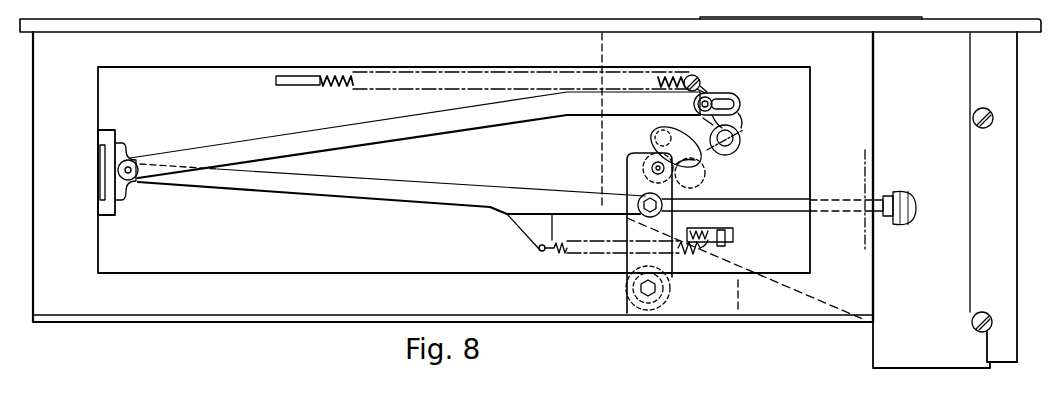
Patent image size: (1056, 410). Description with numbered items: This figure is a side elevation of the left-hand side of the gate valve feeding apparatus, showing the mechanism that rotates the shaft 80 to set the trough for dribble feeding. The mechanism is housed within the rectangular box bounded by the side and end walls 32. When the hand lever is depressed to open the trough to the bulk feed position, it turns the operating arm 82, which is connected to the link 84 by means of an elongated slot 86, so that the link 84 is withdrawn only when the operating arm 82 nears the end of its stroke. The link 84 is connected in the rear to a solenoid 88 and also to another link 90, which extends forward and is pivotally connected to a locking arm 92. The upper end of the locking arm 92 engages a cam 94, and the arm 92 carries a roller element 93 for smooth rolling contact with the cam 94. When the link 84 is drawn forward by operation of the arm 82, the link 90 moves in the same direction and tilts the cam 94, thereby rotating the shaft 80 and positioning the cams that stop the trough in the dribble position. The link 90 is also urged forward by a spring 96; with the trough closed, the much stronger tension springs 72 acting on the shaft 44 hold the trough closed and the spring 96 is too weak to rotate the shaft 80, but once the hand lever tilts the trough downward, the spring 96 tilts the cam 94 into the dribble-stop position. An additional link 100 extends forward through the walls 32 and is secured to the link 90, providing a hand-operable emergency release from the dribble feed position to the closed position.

The side and end walls 32 is at (862, 149).
The shaft 44 is at (742, 146).
The tension springs 72 is at (418, 92).
The shaft 80 is at (655, 136).
The operating arm 82 is at (738, 122).
The link 84 is at (453, 128).
The elongated slot 86 is at (733, 98).
The solenoid 88 is at (117, 213).
The link 90 is at (423, 195).
The locking arm 92 is at (627, 180).
The roller element 93 is at (642, 163).
The cam 94 is at (703, 153).
The spring 96 is at (612, 240).
The link 100 is at (790, 199).